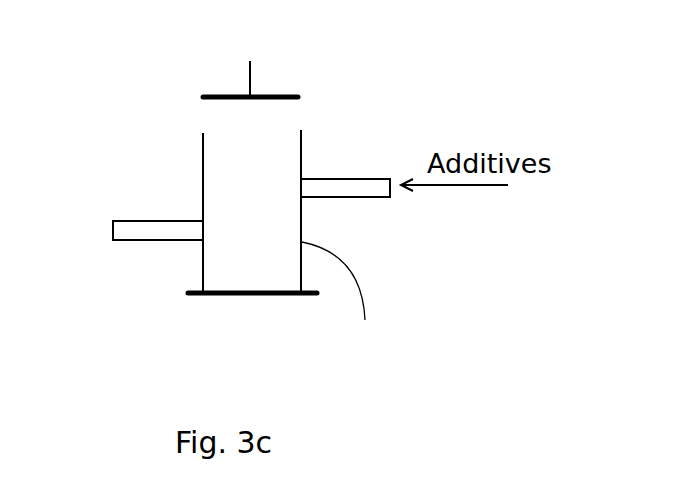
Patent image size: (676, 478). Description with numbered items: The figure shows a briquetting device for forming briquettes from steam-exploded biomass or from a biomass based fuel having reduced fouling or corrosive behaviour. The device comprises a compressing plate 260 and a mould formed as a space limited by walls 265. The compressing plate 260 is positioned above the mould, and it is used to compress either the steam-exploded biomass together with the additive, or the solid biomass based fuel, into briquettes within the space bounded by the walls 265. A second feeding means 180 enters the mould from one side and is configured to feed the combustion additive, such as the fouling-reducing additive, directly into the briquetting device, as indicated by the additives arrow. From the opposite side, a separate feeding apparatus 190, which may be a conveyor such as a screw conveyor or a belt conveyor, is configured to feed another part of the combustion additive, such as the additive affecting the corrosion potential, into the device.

The compressing plate 260 is at (269, 94).
The walls 265 is at (313, 295).
The second feeding means 180 is at (333, 187).
The separate feeding apparatus 190 is at (123, 230).